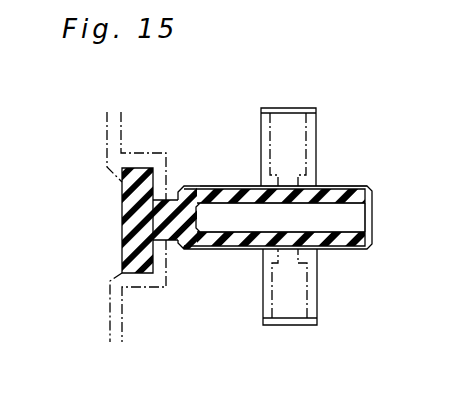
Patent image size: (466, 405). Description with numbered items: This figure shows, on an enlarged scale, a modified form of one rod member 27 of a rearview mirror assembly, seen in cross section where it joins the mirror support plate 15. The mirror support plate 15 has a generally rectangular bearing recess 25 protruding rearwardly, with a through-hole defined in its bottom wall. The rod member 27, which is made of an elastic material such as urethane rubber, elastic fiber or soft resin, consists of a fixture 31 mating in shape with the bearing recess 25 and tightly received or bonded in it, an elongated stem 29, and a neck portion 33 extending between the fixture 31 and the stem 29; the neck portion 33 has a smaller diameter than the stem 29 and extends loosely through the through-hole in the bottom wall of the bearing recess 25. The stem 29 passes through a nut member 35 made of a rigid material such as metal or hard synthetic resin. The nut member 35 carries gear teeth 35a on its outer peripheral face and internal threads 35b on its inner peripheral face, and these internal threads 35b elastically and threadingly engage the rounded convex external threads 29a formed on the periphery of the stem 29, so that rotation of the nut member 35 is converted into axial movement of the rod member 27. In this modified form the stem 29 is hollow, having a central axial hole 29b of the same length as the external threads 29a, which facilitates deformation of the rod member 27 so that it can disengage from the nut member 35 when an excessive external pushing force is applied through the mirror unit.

The mirror support plate 15 is at (115, 317).
The bearing recess 25 is at (151, 297).
The rod member 27 is at (345, 250).
The elongated stem 29 is at (317, 217).
The external threads 29a is at (338, 188).
The hole 29b is at (328, 217).
The fixture 31 is at (130, 238).
The neck portion 33 is at (167, 229).
The nut member 35 is at (317, 187).
The gear teeth 35a is at (305, 108).
The internal threads 35b is at (298, 180).